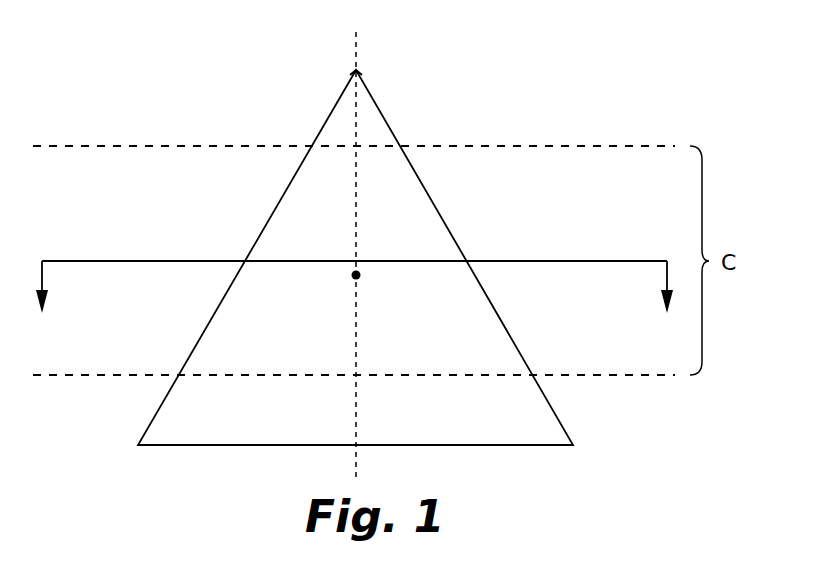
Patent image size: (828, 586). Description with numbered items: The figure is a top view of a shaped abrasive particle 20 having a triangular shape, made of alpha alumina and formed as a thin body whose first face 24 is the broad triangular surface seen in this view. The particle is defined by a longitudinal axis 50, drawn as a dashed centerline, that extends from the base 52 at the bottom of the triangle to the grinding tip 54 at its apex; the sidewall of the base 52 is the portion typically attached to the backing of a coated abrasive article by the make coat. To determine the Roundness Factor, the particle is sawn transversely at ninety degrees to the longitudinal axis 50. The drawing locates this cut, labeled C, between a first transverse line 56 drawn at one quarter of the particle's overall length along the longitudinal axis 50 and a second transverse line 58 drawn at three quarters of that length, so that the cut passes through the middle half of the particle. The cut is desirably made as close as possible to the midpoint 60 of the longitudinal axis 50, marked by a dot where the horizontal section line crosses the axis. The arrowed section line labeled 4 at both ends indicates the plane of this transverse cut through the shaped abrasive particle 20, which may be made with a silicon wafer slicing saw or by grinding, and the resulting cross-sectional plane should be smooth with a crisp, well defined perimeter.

The shaped abrasive particle 20 is at (212, 67).
The first face 24 is at (293, 225).
The longitudinal axis 50 is at (353, 466).
The base 52 is at (490, 447).
The grinding tip 54 is at (357, 70).
The first transverse line 56 is at (497, 146).
The second transverse line 58 is at (622, 400).
The midpoint 60 is at (352, 275).
The section line 4- 4 is at (353, 307).